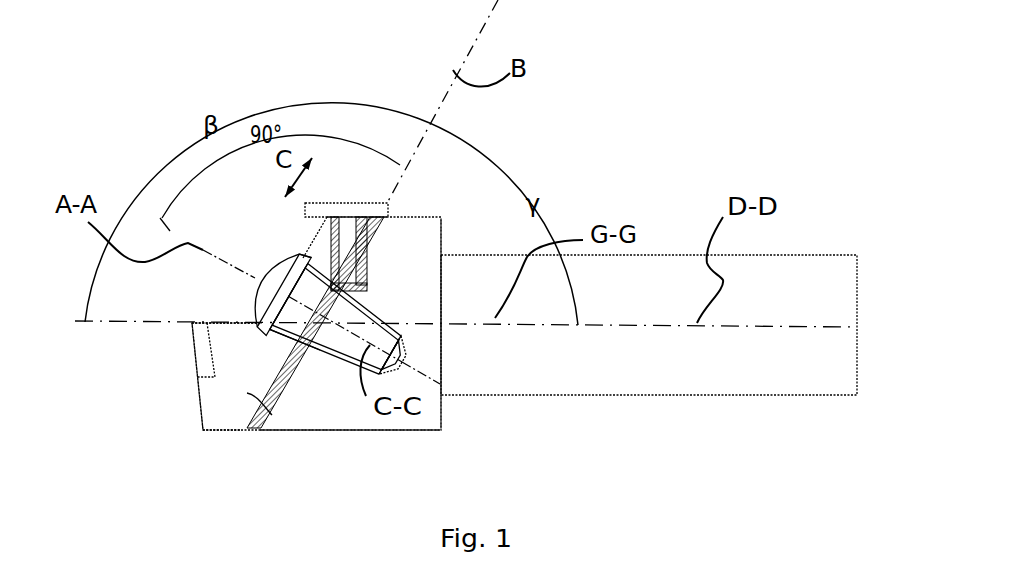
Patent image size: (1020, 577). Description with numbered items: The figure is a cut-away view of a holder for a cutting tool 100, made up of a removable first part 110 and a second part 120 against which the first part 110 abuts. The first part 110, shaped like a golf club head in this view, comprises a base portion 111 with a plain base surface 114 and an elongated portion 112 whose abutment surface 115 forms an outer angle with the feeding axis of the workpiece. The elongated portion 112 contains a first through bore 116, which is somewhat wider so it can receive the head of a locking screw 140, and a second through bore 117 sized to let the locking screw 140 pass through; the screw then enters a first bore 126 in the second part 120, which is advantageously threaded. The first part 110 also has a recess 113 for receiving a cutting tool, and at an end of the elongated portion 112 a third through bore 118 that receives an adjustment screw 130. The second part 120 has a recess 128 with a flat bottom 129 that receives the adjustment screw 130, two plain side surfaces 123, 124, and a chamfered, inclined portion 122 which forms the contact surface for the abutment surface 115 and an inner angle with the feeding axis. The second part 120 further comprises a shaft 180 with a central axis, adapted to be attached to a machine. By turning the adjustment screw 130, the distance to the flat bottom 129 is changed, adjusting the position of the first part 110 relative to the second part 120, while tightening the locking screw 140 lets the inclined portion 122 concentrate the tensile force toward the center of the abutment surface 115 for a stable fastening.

The holder for a cutting tool 100 is at (503, 147).
The first removable part 110 is at (156, 400).
The base portion 111 is at (181, 318).
The elongated portion 112 is at (268, 255).
The recess 113 is at (198, 367).
The base surface 114 is at (215, 433).
The abutment surface 115 is at (247, 393).
The first through bore 116 is at (263, 340).
The second through bore 117 is at (295, 342).
The third through bore 118 is at (325, 260).
The second part 120 is at (320, 462).
The inclined portion 122 is at (272, 393).
The side surface 123 is at (343, 433).
The side surface 124 is at (443, 412).
The first bore 126 is at (352, 365).
The recess 128 is at (367, 267).
The flat bottom 129 is at (352, 292).
The adjustment screw 130 is at (338, 200).
The locking screw 140 is at (280, 271).
The shaft 180 is at (570, 330).